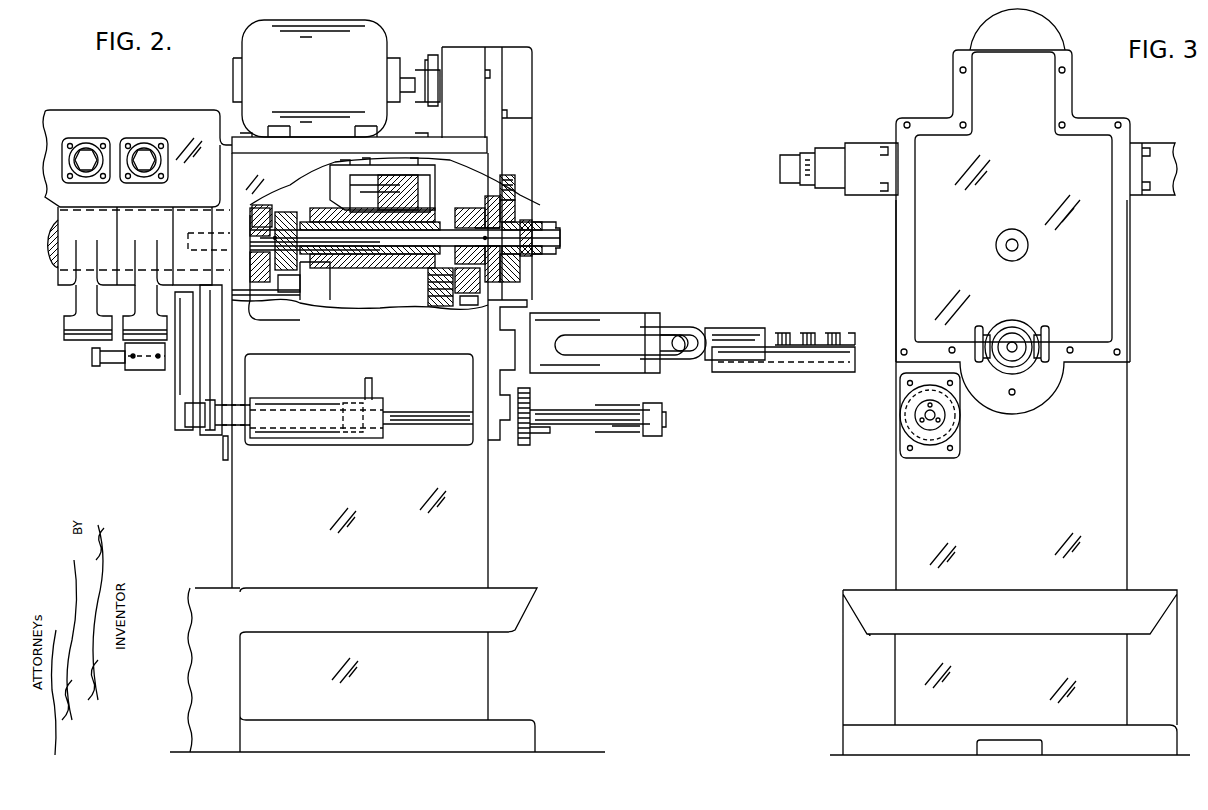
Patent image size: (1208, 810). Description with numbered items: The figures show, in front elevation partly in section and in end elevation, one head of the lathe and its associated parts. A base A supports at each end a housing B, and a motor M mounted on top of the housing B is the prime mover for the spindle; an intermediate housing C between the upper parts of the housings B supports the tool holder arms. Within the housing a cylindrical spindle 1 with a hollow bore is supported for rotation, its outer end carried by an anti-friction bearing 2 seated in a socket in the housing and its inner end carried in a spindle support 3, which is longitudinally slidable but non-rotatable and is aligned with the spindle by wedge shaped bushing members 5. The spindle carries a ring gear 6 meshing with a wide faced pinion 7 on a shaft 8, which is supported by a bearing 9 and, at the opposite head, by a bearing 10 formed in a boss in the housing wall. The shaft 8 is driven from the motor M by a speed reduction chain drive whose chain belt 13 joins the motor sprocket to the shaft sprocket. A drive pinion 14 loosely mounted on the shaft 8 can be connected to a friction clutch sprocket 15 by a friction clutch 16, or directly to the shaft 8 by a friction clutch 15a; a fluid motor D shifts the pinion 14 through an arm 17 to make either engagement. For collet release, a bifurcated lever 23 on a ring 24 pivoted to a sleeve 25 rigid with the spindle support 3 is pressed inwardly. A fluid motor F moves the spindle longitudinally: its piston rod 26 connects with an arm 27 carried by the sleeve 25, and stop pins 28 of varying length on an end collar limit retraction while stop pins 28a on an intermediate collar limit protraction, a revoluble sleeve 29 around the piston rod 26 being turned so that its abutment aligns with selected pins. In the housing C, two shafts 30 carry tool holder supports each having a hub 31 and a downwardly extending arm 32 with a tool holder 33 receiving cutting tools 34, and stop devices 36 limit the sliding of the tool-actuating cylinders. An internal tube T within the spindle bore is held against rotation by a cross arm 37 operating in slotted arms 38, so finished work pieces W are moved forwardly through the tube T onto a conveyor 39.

In FIG. 2, the cylindrical spindle 1 is at (598, 320).
In FIG. 2, the anti-friction bearing 2 is at (482, 308).
In FIG. 2, the spindle support 3 is at (350, 300).
In FIG. 2, the wedge shaped bushing members 5 is at (262, 290).
In FIG. 2, the ring gear 6 is at (430, 303).
In FIG. 2, the wide faced pinion 7 is at (400, 268).
In FIG. 2, the shaft 8 is at (560, 240).
In FIG. 3, the shaft 8 is at (1018, 250).
In FIG. 2, the bearing 9 is at (258, 212).
In FIG. 2, the bearing 10 is at (550, 228).
In FIG. 2, the chain belt 13 is at (513, 192).
In FIG. 2, the drive pinion 14 is at (368, 268).
In FIG. 2, the friction clutch sprocket 15 is at (525, 212).
In FIG. 2, the friction clutch 15a is at (300, 275).
In FIG. 2, the friction clutch 16 is at (470, 285).
In FIG. 2, the arm 17 is at (480, 190).
In FIG. 2, the bifurcated lever 23 is at (183, 418).
In FIG. 2, the ring 24 is at (178, 383).
In FIG. 2, the sleeve 25 is at (215, 360).
In FIG. 2, the piston rod 26 is at (410, 422).
In FIG. 2, the arm 27 is at (200, 437).
In FIG. 2, the stop pins 28 is at (648, 405).
In FIG. 2, the stop pins 28a is at (540, 433).
In FIG. 2, the revoluble sleeve 29 is at (530, 405).
In FIG. 3, the revoluble sleeve 29 is at (912, 420).
In FIG. 2, the shafts 30 is at (50, 270).
In FIG. 2, the hub 31 is at (135, 246).
In FIG. 2, the arm 32 is at (76, 320).
In FIG. 2, the tool holder 33 is at (130, 360).
In FIG. 2, the cutting tools 34 is at (96, 366).
In FIG. 3, the stop devices 36 is at (790, 152).
In FIG. 2, the cross arm 37 is at (683, 350).
In FIG. 2, the slotted arms 38 is at (665, 330).
In FIG. 2, the conveyor 39 is at (800, 372).
In FIG. 2, the base A is at (387, 670).
In FIG. 3, the base A is at (1010, 672).
In FIG. 2, the housing B is at (360, 370).
In FIG. 3, the housing B is at (1011, 395).
In FIG. 2, the intermediate housing C is at (85, 108).
In FIG. 2, the fluid motor D is at (360, 192).
In FIG. 2, the fluid motor F is at (337, 440).
In FIG. 2, the motor M is at (382, 160).
In FIG. 3, the motor M is at (965, 42).
In FIG. 2, the internal tube T is at (715, 328).
In FIG. 2, the work W is at (780, 338).